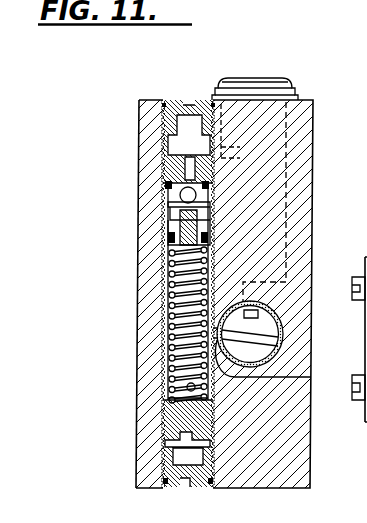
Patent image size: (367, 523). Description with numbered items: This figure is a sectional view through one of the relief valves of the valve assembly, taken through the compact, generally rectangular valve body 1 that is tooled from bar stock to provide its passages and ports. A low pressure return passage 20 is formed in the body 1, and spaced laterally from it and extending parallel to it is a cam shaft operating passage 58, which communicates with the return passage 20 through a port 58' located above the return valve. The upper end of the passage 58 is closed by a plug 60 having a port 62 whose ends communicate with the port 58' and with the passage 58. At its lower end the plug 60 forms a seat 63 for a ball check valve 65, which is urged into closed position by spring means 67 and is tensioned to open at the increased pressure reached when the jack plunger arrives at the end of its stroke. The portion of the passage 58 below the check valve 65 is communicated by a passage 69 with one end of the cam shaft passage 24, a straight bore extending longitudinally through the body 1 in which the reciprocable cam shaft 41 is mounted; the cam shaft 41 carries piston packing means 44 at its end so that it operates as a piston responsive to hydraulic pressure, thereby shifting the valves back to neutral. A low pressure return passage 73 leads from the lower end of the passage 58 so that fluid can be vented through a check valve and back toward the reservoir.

The valve body 1 is at (138, 109).
The return passage 20 is at (283, 187).
The cam shaft passage 24 is at (292, 299).
The cam shaft 41 is at (270, 326).
The piston packing means 44 is at (283, 348).
The cam shaft operating passage 58 is at (144, 291).
The port 58' is at (286, 141).
The plug 60 is at (168, 173).
The port 62 is at (170, 182).
The seat 63 is at (170, 203).
The ball check valve 65 is at (170, 221).
The spring means 67 is at (170, 277).
The passage 69 is at (304, 377).
The low pressure return passage 73 is at (168, 403).